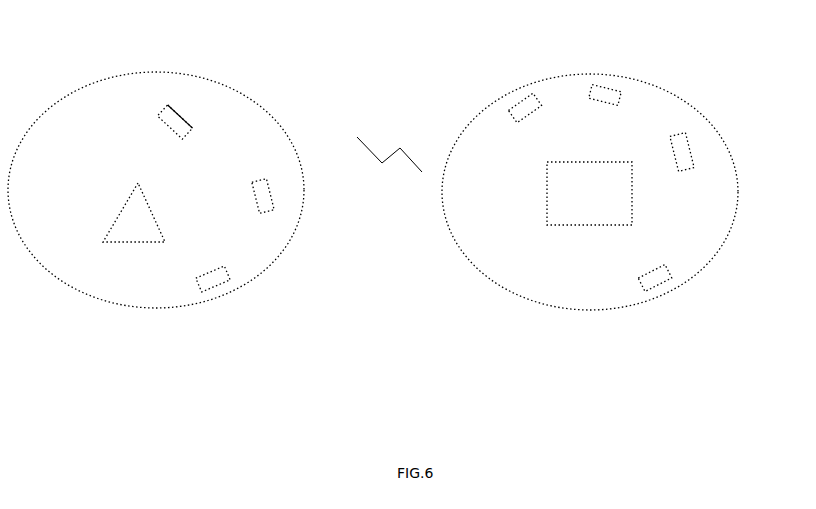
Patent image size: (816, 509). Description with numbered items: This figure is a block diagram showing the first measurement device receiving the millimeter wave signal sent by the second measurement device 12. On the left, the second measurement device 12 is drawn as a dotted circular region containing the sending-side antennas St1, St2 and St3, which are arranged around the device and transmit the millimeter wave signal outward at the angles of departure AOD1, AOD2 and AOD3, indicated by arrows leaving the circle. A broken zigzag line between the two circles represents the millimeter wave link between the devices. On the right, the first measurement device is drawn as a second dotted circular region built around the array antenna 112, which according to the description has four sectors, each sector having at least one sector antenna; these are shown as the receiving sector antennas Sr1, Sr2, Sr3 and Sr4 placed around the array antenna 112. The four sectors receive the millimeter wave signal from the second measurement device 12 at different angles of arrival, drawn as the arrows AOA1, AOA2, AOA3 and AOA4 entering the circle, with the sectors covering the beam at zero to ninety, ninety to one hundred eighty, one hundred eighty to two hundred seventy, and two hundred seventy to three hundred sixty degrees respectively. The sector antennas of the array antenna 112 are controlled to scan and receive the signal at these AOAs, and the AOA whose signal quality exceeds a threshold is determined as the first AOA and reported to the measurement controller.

The second measurement device 12 is at (140, 183).
The array antenna 112 is at (610, 161).
The first transmitting antenna St1 is at (170, 115).
The second transmitting antenna St2 is at (260, 184).
The third transmitting antenna St3 is at (211, 274).
The first receiving antenna Sr1 is at (531, 115).
The second receiving antenna Sr2 is at (605, 106).
The third receiving antenna Sr3 is at (675, 148).
The fourth receiving antenna Sr4 is at (659, 267).
The angle of departure 1 AOD1 is at (243, 43).
The angle of departure 2 AOD2 is at (334, 170).
The angle of departure 3 AOD3 is at (244, 346).
The angle of arrival 1 AOA1 is at (503, 73).
The angle of arrival 2 AOA2 is at (623, 27).
The angle of arrival 3 AOA3 is at (779, 128).
The angle of arrival 4 AOA4 is at (685, 348).